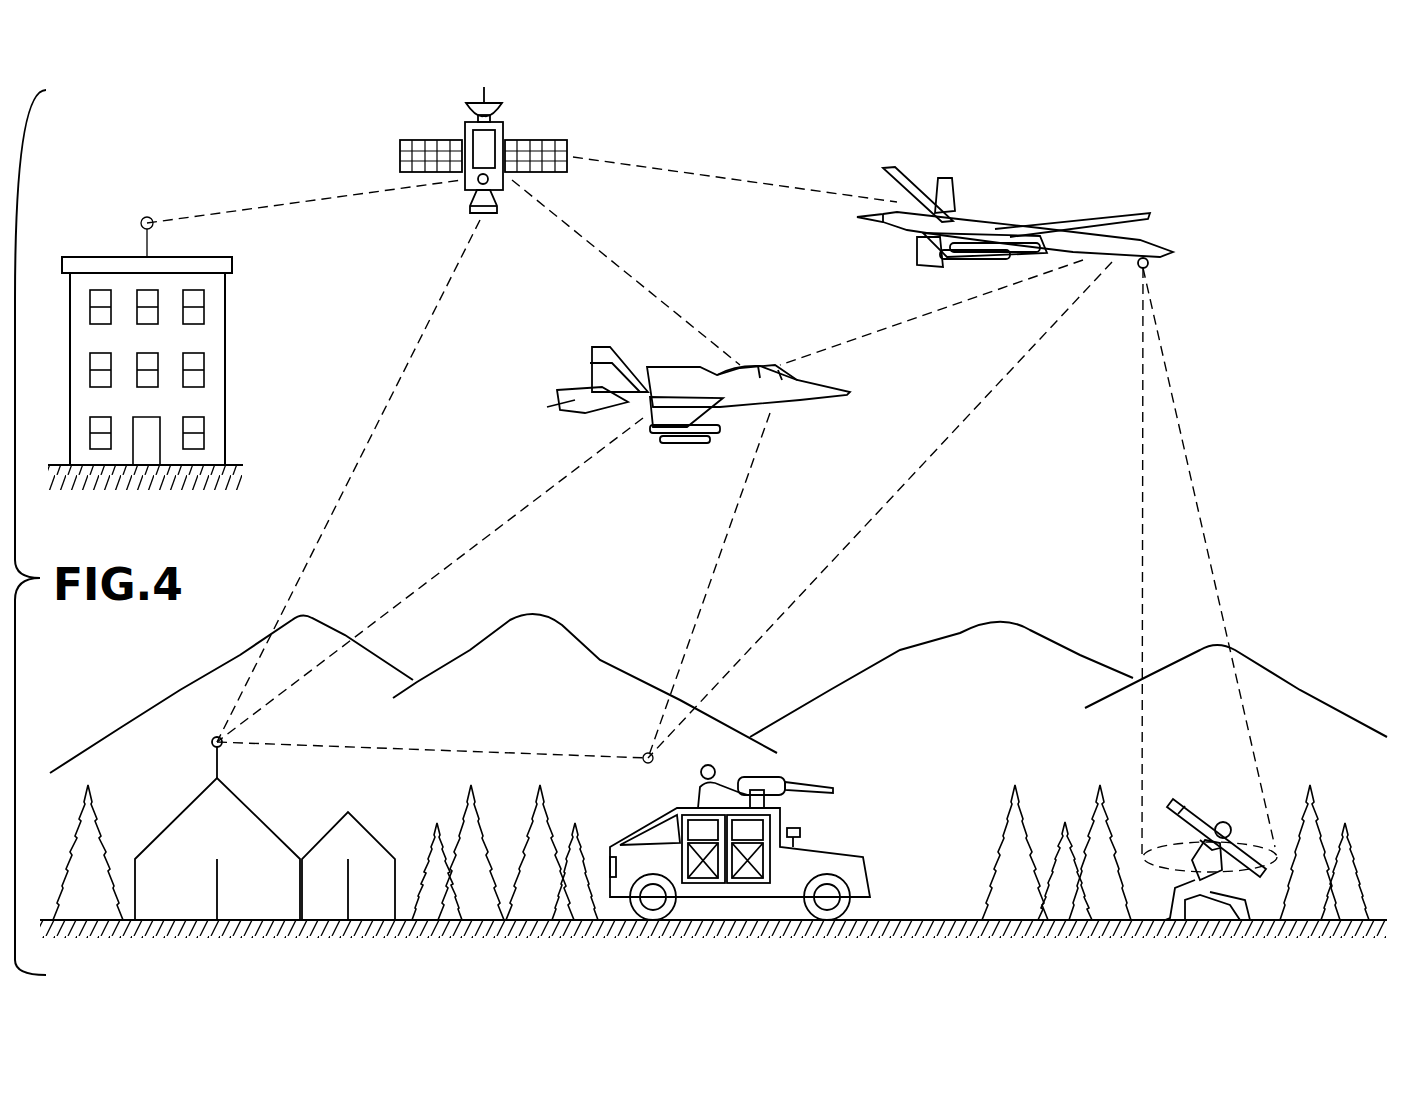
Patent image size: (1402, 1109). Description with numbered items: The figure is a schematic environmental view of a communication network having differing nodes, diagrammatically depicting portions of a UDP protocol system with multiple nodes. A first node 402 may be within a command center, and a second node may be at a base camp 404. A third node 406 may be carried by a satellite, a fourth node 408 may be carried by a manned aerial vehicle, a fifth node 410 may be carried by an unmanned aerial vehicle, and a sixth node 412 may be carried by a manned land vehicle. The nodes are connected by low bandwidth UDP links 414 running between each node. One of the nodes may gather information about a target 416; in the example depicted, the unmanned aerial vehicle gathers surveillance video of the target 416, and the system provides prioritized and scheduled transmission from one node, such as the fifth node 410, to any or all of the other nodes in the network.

The first node 402 is at (225, 308).
The base camp 404 is at (168, 825).
The third node 406 is at (445, 140).
The fourth node 408 is at (793, 407).
The fifth node 410 is at (1000, 217).
The sixth node 412 is at (830, 847).
The UDP links 414 is at (282, 203).
The target 416 is at (1223, 820).